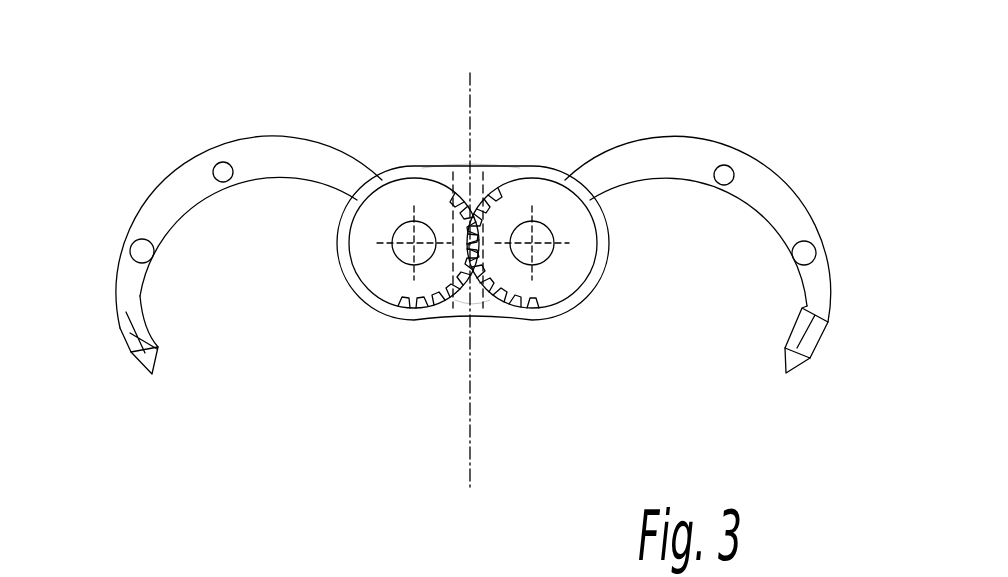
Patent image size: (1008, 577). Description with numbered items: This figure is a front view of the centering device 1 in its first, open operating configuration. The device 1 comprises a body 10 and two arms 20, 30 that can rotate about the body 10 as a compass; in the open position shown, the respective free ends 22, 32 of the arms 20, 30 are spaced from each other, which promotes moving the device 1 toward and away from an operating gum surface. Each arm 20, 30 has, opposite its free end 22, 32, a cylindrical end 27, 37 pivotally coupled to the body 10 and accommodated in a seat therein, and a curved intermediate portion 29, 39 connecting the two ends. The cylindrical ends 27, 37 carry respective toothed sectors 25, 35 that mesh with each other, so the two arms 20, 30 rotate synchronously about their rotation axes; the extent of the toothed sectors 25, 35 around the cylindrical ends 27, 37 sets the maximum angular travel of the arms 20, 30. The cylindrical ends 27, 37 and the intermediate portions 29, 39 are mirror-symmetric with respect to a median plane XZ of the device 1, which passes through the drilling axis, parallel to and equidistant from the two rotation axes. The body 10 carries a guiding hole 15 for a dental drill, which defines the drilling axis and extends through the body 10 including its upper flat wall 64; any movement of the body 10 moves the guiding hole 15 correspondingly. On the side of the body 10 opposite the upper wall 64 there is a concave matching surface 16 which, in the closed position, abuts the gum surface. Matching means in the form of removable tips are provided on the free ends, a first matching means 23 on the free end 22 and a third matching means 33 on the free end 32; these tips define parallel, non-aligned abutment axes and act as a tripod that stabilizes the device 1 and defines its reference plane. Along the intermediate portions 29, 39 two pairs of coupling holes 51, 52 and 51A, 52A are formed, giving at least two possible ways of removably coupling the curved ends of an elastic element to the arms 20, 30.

The device 1 is at (142, 118).
The body 10 is at (548, 165).
The guiding hole 15 is at (462, 167).
The matching surface 16 is at (478, 318).
The arm 20 is at (740, 210).
The free end 22 is at (815, 340).
The first matching means 23 is at (797, 375).
The toothed sector 25 is at (537, 303).
The cylindrical end 27 is at (573, 290).
The curved intermediate portion 29 is at (772, 192).
The arm 30 is at (200, 215).
The free end 32 is at (128, 333).
The third matching means 33 is at (145, 378).
The toothed sector 35 is at (430, 300).
The cylindrical end 37 is at (372, 275).
The curved intermediate portion 39 is at (148, 202).
The coupling hole 51 is at (800, 260).
The coupling hole 51A is at (724, 165).
The coupling hole 52 is at (144, 253).
The coupling hole 52A is at (222, 162).
The upper flat wall 64 is at (423, 165).
The median plane XZ is at (473, 87).